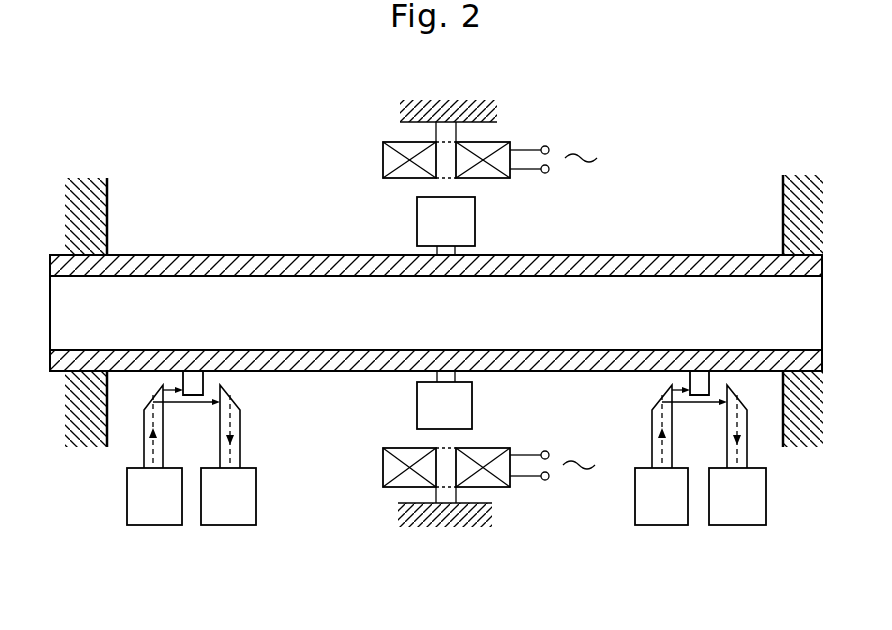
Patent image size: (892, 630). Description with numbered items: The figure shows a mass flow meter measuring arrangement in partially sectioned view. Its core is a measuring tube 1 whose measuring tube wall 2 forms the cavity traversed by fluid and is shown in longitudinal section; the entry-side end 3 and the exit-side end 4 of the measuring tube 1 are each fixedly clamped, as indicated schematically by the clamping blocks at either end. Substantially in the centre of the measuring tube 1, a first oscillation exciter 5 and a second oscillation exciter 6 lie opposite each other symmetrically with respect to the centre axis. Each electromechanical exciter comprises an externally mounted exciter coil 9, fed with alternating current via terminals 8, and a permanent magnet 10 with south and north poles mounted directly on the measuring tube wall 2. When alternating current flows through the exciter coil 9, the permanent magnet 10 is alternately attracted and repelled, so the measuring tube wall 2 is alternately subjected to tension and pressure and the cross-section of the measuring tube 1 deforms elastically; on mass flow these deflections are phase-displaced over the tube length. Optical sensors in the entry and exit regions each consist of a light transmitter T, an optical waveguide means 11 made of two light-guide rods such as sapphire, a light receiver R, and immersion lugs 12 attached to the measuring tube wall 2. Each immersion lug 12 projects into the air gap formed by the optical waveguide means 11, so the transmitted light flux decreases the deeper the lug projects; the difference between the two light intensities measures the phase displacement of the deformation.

The measuring tube 1 is at (389, 327).
The measuring tube wall 2 is at (155, 266).
The entry-side end 3 is at (87, 277).
The exit-side end 4 is at (780, 277).
The first oscillation exciter 5 is at (356, 177).
The second oscillation exciter 6 is at (365, 431).
The terminals 8 is at (549, 146).
The exciter coil 9 is at (500, 178).
The permanent magnet 10 is at (417, 228).
The optical waveguide means 11 is at (143, 437).
The immersion lugs 12 is at (690, 375).